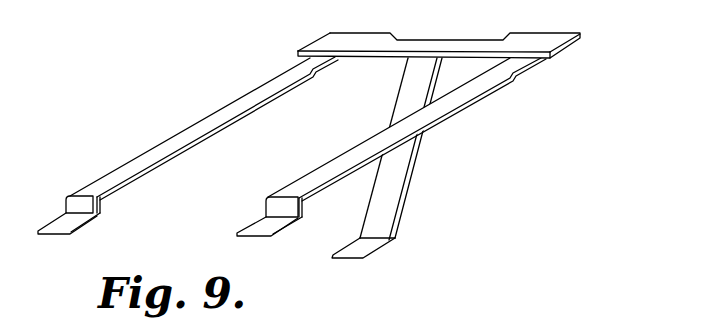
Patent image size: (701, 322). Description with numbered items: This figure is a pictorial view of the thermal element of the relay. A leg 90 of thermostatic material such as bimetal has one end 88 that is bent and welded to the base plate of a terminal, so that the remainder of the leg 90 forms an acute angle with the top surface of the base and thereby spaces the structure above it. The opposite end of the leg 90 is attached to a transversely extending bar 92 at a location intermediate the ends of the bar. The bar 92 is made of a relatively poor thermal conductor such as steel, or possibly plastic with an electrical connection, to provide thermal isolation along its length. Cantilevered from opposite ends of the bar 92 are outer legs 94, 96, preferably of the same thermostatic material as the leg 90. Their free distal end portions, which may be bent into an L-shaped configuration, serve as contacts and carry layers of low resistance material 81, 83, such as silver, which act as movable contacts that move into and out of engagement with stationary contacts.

The layer of low resistance material 81 is at (68, 227).
The layer of low resistance material 83 is at (267, 224).
The end of leg 88 is at (355, 246).
The leg 90 is at (412, 88).
The transversely extending bar 92 is at (433, 43).
The outer leg 94 is at (185, 135).
The outer leg 96 is at (370, 144).